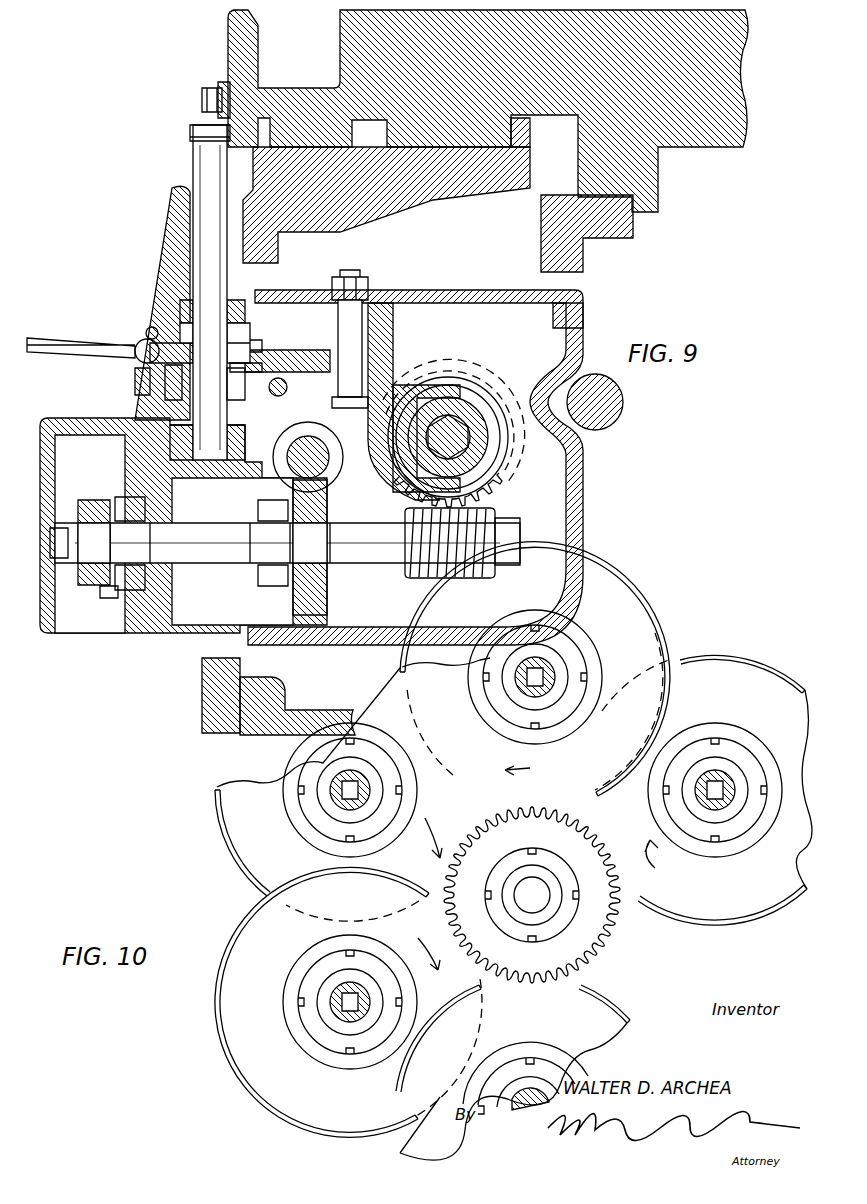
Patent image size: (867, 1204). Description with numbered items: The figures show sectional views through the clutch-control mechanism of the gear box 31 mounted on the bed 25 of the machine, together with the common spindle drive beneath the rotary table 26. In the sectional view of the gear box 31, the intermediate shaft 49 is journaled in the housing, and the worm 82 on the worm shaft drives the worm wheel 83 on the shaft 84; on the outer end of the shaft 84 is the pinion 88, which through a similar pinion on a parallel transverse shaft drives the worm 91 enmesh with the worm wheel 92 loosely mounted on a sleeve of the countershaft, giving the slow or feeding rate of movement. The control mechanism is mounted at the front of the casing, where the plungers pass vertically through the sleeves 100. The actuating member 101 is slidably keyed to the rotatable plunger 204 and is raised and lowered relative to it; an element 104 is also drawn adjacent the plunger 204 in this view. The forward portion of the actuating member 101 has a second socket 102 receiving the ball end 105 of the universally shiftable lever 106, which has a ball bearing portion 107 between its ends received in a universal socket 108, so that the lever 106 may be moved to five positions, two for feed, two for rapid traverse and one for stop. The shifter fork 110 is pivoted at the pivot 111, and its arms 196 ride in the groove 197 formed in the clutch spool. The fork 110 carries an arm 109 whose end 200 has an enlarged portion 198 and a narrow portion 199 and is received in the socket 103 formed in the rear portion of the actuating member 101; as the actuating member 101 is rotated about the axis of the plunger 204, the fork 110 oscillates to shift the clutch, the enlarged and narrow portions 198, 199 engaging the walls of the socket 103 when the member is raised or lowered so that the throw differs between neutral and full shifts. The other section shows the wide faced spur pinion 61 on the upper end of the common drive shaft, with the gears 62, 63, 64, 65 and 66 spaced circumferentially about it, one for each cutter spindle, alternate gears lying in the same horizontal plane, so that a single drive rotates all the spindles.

In FIG. 9, the bed 25 is at (330, 712).
In FIG. 9, the table 26 is at (228, 36).
In FIG. 9, the gear box 31 is at (583, 325).
In FIG. 9, the intermediate shaft 49 is at (322, 462).
In FIG. 10, the spur pinion 61 is at (598, 925).
In FIG. 10, the gear 62 is at (760, 670).
In FIG. 10, the gear 63 is at (630, 628).
In FIG. 10, the gear 64 is at (250, 836).
In FIG. 10, the gear 65 is at (235, 994).
In FIG. 10, the gear 66 is at (590, 1005).
In FIG. 9, the worm 82 is at (325, 440).
In FIG. 9, the worm wheel 83 is at (322, 488).
In FIG. 9, the shaft 84 is at (240, 555).
In FIG. 9, the pinion 88 is at (108, 598).
In FIG. 9, the worm 91 is at (437, 578).
In FIG. 9, the worm wheel 92 is at (492, 385).
In FIG. 9, the sleeves 100 is at (180, 200).
In FIG. 9, the actuating member 101 is at (180, 398).
In FIG. 9, the second socket 102 is at (138, 395).
In FIG. 9, the socket 103 is at (259, 340).
In FIG. 9, the collar 104 is at (255, 412).
In FIG. 9, the ball end 105 is at (160, 310).
In FIG. 9, the lever 106 is at (70, 343).
In FIG. 9, the ball bearing portion 107 is at (135, 355).
In FIG. 9, the universal socket 108 is at (146, 330).
In FIG. 9, the arm 109 is at (310, 352).
In FIG. 9, the shifter fork 110 is at (375, 365).
In FIG. 9, the pivot 111 is at (380, 295).
In FIG. 9, the arms 196 is at (445, 385).
In FIG. 9, the groove 197 is at (495, 447).
In FIG. 9, the enlarged portion 198 is at (228, 378).
In FIG. 9, the narrow portion 199 is at (228, 358).
In FIG. 9, the end 200 is at (258, 385).
In FIG. 9, the plunger 204 is at (200, 178).